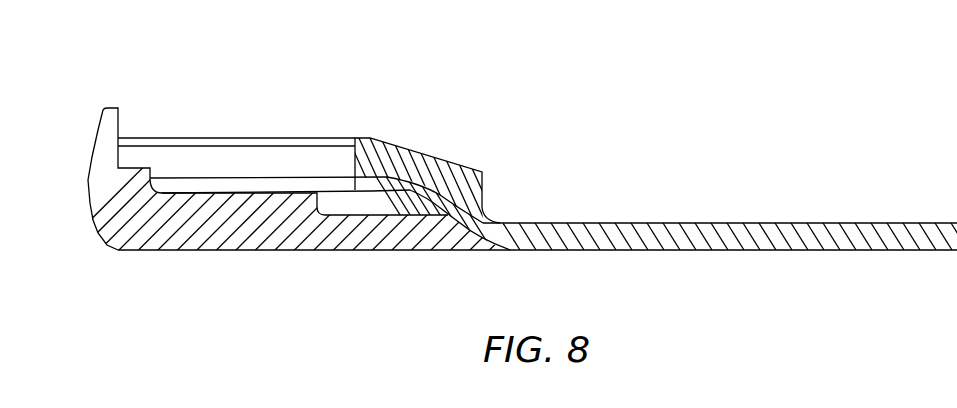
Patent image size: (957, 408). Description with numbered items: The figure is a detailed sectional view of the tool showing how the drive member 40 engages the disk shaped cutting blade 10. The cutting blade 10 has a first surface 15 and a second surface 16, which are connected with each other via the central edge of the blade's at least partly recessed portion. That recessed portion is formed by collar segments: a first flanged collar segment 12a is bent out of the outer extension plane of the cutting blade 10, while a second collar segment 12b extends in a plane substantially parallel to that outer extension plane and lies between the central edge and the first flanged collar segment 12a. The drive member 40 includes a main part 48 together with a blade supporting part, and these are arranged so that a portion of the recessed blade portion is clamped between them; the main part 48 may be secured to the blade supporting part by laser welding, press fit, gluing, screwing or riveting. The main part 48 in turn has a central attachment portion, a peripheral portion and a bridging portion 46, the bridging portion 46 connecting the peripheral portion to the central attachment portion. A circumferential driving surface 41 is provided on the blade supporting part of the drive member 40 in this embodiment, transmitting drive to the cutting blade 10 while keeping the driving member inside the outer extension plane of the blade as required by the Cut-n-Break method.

The disk shaped cutting blade 10 is at (912, 223).
The first flanged collar segment 12a is at (405, 215).
The second collar segment 12b is at (378, 197).
The first surface 15 is at (771, 223).
The second surface 16 is at (752, 251).
The drive member 40 is at (495, 71).
The circumferential driving surface 41 is at (462, 168).
The bridging portion 46 is at (202, 264).
The main part 48 is at (442, 137).